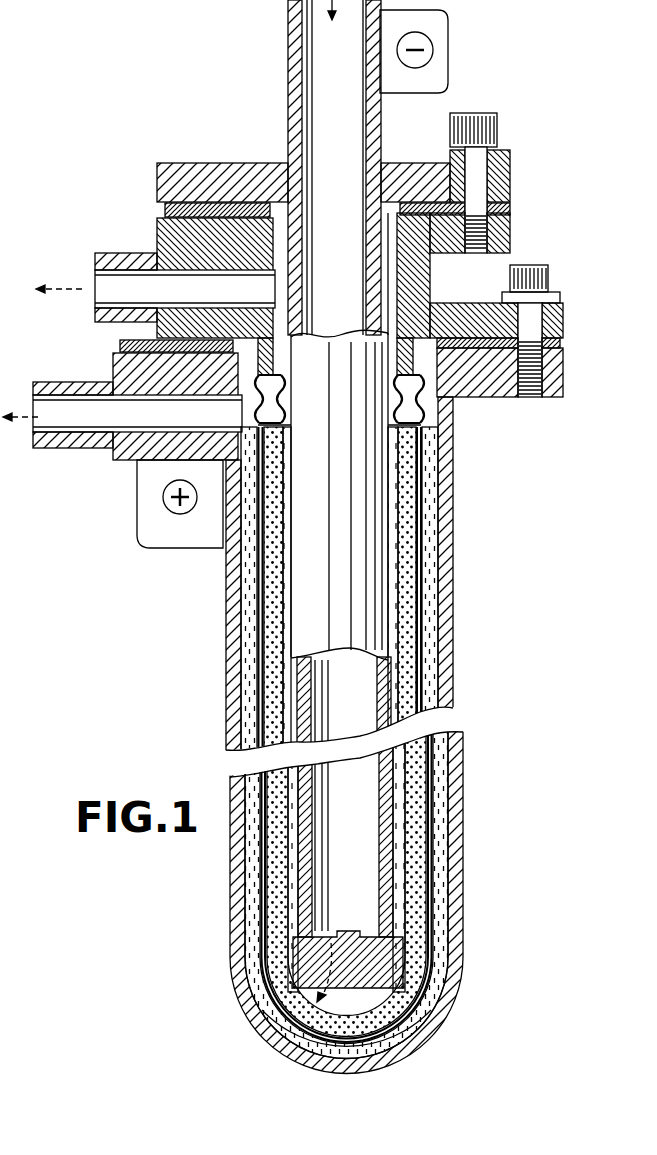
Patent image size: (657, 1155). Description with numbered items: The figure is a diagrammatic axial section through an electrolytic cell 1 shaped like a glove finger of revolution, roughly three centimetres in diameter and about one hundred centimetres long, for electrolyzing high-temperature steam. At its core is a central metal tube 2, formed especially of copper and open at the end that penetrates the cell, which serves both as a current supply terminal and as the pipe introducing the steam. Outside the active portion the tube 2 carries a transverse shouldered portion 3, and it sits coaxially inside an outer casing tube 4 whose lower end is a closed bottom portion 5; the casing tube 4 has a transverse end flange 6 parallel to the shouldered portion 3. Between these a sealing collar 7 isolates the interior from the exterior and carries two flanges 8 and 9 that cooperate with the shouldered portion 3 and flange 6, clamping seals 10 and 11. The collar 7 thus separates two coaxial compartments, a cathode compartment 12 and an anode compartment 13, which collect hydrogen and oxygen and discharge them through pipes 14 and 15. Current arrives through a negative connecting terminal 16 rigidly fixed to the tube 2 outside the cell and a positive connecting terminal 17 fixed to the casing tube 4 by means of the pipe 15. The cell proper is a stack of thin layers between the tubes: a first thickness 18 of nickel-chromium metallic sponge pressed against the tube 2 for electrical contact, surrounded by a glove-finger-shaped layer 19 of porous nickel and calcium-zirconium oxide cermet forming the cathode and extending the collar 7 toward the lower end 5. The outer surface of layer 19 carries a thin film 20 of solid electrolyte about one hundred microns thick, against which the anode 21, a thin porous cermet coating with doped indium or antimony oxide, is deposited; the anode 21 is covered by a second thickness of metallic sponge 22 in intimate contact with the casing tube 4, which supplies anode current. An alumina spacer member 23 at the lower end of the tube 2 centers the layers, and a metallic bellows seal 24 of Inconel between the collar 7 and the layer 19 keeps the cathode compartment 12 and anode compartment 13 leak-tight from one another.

The probe assembly 1 is at (524, 570).
The central metal tube 2 is at (305, 878).
The transverse shouldered portion 3 is at (415, 172).
The outer casing tube 4 is at (236, 726).
The closed bottom portion 5 is at (280, 1056).
The transverse end flange 6 is at (564, 379).
The sealing collar 7 is at (222, 200).
The collar flange 8 is at (506, 236).
The collar flange 9 is at (563, 313).
The seal 10 is at (558, 341).
The seal 11 is at (498, 211).
The cathode compartment 12 is at (390, 293).
The anode compartment 13 is at (428, 393).
The discharge pipe 14 is at (112, 253).
The discharge pipe 15 is at (82, 448).
The negative connecting terminal 16 is at (446, 60).
The positive connecting terminal 17 is at (180, 540).
The first thickness of metallic sponge 18 is at (283, 631).
The layer of porous cermet 19 is at (410, 613).
The thin film of solid electrolyte 20 is at (419, 675).
The anode 21 is at (440, 771).
The second thickness of metallic sponge 22 is at (442, 831).
The alumina spacer member 23 is at (404, 966).
The metallic bellows seal 24 is at (410, 412).